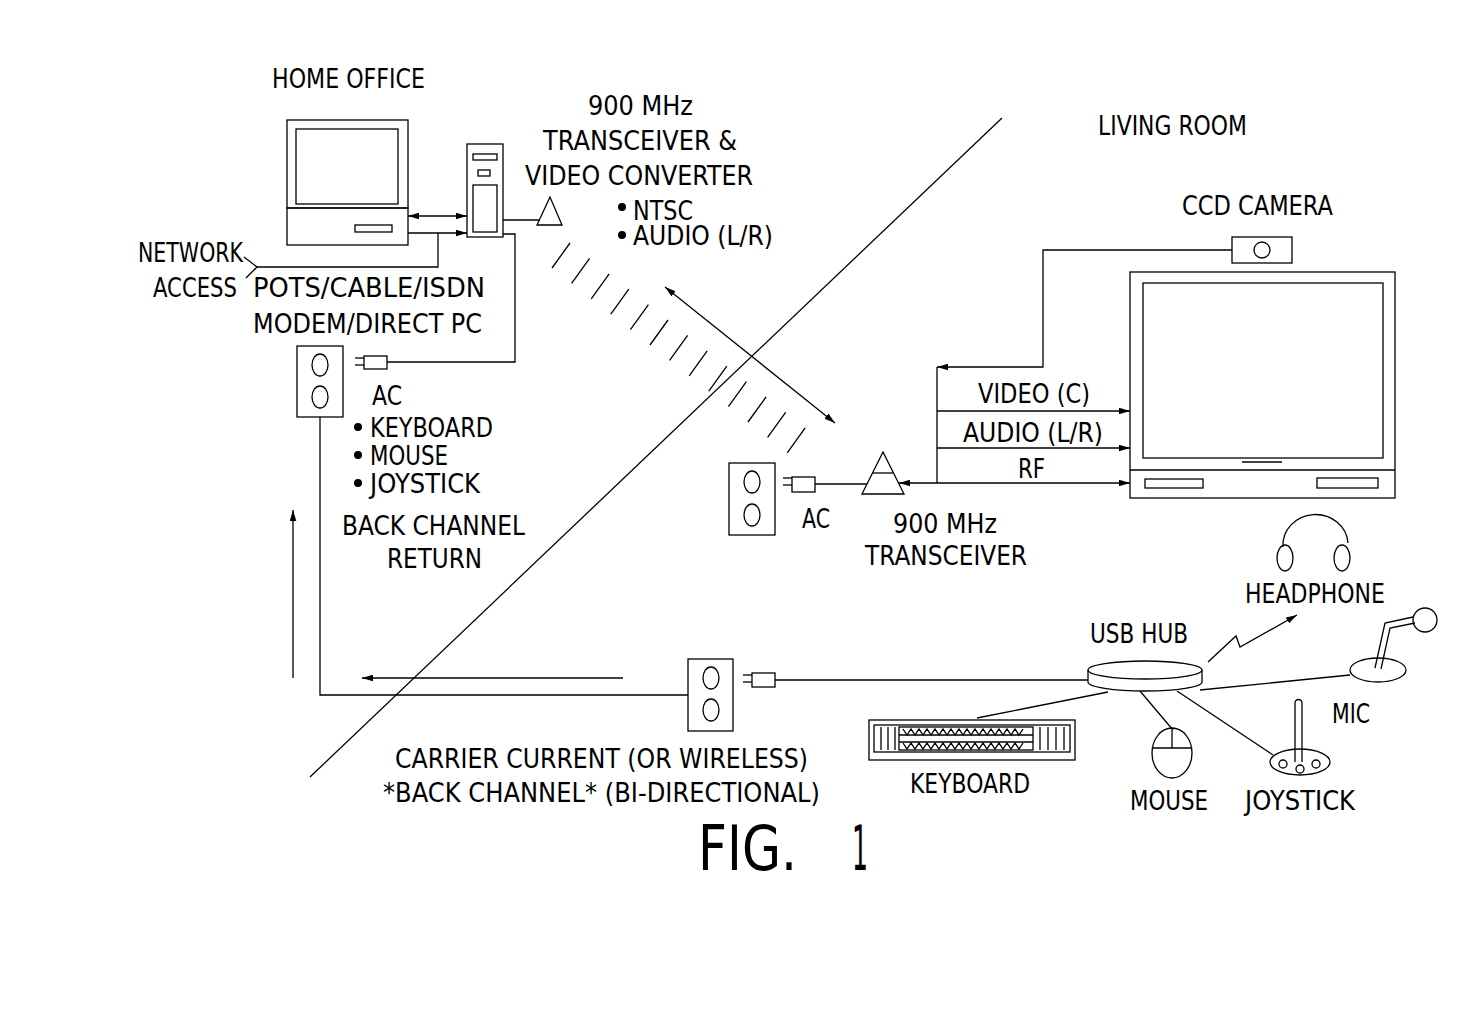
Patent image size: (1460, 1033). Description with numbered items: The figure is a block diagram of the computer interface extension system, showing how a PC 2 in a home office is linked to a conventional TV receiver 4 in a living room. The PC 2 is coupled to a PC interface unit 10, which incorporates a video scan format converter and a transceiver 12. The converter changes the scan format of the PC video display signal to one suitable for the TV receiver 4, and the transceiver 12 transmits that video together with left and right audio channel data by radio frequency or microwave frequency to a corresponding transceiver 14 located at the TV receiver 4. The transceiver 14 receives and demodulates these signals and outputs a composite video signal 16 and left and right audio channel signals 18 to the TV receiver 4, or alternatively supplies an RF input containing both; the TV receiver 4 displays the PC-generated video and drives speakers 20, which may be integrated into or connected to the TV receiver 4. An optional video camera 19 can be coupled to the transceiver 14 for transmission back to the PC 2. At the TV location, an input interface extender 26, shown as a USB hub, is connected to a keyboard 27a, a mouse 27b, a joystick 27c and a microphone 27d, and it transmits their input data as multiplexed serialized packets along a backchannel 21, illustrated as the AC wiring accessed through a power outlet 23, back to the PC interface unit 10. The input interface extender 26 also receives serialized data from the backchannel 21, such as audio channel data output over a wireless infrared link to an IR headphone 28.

The PC 2 is at (287, 160).
The TV receiver 4 is at (1286, 406).
The PC interface unit 10 is at (490, 144).
The transceiver 12 is at (555, 220).
The transceiver 14 is at (876, 462).
The composite video signal 16 is at (1098, 408).
The left and right audio channel signals 18 is at (955, 448).
The video camera 19 is at (1292, 250).
The speakers 20 is at (1168, 485).
The backchannel 21 is at (320, 620).
The power outlet 23 is at (297, 382).
The input interface extender 26 is at (1090, 665).
The keyboard 27a is at (868, 719).
The mouse 27b is at (1150, 760).
The joystick 27c is at (1330, 762).
The microphone 27d is at (1402, 684).
The IR headphone 28 is at (1348, 540).